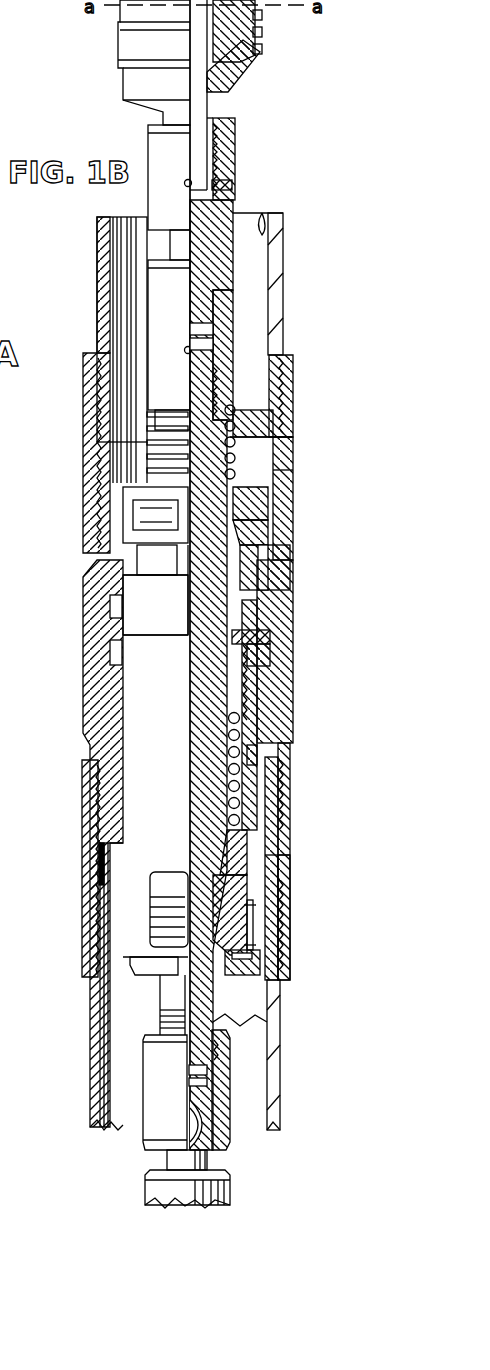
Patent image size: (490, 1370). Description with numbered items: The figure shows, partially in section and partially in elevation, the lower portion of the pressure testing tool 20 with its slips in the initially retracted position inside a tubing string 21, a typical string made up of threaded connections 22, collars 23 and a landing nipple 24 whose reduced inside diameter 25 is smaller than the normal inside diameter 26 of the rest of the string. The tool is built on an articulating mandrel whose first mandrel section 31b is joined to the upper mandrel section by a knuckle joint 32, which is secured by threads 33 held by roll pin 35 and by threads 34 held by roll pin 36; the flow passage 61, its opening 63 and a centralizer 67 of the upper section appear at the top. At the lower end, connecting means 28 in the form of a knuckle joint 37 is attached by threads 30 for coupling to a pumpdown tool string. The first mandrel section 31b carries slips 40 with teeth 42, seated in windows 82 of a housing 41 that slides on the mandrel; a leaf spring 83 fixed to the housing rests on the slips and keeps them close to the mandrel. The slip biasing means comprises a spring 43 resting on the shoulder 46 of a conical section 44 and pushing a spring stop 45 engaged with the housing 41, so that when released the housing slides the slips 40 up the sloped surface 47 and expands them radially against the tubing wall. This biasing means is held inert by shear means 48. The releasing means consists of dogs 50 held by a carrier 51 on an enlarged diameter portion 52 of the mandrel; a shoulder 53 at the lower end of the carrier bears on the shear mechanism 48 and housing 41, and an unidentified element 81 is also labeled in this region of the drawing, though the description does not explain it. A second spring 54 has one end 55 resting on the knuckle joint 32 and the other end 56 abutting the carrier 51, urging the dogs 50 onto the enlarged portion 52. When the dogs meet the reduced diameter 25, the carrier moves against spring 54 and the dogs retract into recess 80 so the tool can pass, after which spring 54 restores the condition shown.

The pressure testing tool 20 is at (272, 182).
The tubing string 21 is at (275, 262).
The threaded connections 22 is at (292, 383).
The collars 23 is at (283, 452).
The landing nipple 24 is at (272, 686).
The reduced inside diameter 25 is at (220, 553).
The inside diameter 26 is at (265, 232).
The connecting means 28 is at (237, 1153).
The threads 30 is at (217, 1020).
The first mandrel section 31b is at (195, 715).
The knuckle joint 32 is at (155, 292).
The threads 33 is at (220, 157).
The threads 34 is at (285, 373).
The roll pin 35 is at (232, 186).
The roll pin 36 is at (240, 348).
The knuckle joints 37 is at (150, 1186).
The slips 40 is at (240, 893).
The housing 41 is at (250, 790).
The teeth 42 is at (250, 936).
The spring 43 is at (242, 723).
The conical section 44 is at (222, 850).
The spring stop 45 is at (265, 668).
The shoulder 46 is at (228, 812).
The sloped surface 47 is at (245, 863).
The shear means 48 is at (215, 635).
The dog means 50 is at (276, 556).
The carrier 51 is at (195, 565).
The enlarged diameter portion 52 is at (250, 508).
The shoulder 53 is at (268, 640).
The second spring 54 is at (150, 455).
The end 55 is at (260, 413).
The end 56 is at (258, 478).
The flow passage 61 is at (205, 35).
The opening 63 is at (245, 85).
The centralizer 67 is at (262, 30).
The recess 80 is at (238, 466).
The passage 81 is at (172, 582).
The windows 82 is at (143, 877).
The leaf spring 83 is at (250, 915).